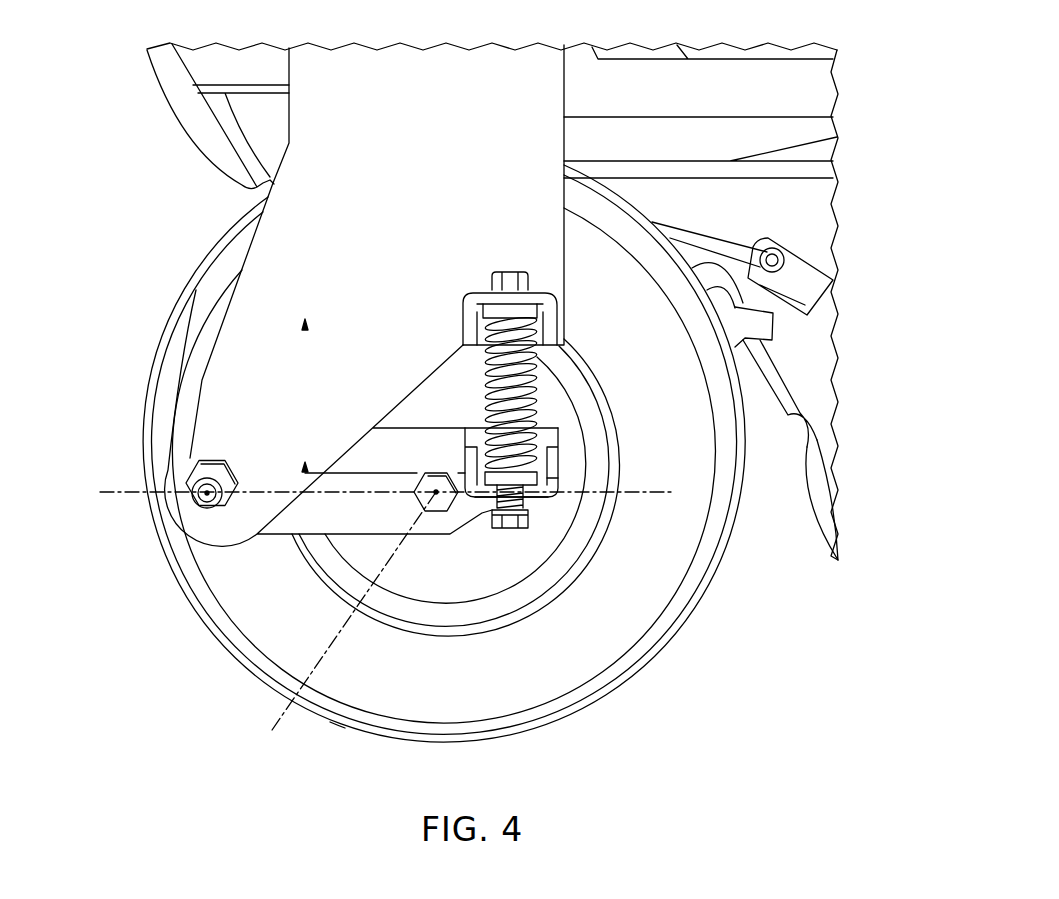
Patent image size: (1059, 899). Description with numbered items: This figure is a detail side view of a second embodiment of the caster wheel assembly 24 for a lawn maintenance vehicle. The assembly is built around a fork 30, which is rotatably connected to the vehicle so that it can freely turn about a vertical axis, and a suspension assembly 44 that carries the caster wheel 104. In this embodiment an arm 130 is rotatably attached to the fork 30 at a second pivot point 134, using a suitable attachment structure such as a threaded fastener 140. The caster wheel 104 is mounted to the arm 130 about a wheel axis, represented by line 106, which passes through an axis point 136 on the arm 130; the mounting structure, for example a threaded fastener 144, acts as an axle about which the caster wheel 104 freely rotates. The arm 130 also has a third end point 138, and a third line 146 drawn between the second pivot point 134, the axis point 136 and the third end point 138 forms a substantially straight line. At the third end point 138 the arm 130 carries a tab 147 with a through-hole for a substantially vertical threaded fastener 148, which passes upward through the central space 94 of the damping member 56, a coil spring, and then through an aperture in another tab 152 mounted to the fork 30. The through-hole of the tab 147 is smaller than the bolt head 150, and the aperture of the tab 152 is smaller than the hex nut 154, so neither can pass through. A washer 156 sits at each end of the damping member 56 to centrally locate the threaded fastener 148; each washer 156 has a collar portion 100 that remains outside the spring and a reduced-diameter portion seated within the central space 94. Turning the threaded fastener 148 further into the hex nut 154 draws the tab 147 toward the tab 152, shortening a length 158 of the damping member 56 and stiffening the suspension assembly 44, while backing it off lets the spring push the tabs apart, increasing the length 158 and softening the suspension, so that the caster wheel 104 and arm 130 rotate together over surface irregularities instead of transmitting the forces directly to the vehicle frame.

The caster wheel assembly 24 is at (158, 258).
The fork 30 is at (565, 272).
The suspension assembly 44 is at (580, 656).
The damping member 56 is at (485, 394).
The central space 94 is at (535, 393).
The collar portion 100 is at (483, 308).
The caster wheel 104 is at (336, 724).
The wheel axis 106 is at (283, 717).
The arm 130 is at (422, 536).
The second pivot point 134 is at (207, 495).
The axis point 136 is at (434, 494).
The third end point 138 is at (506, 490).
The threaded fastener 140 is at (210, 460).
The threaded fastener 144 is at (413, 490).
The third line 146 is at (656, 492).
The tab 147 is at (558, 462).
The threaded fastener 148 is at (548, 504).
The bolt head 150 is at (515, 530).
The tab 152 is at (470, 293).
The hex nut 154 is at (513, 272).
The washer 156 is at (543, 308).
The length 158 is at (308, 395).